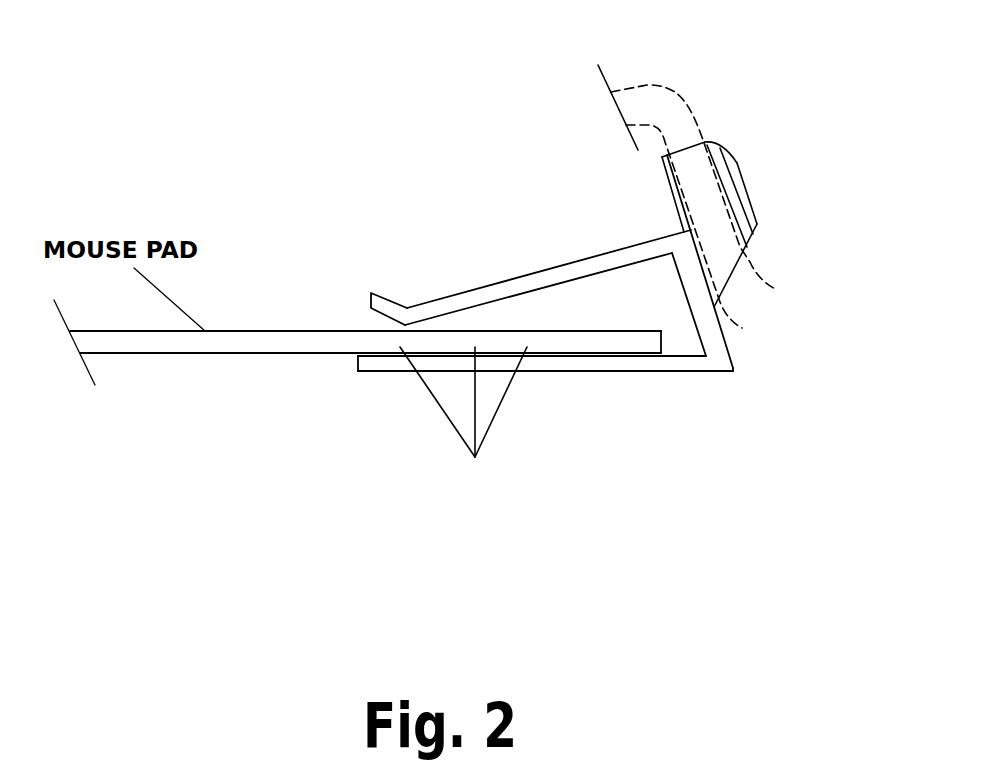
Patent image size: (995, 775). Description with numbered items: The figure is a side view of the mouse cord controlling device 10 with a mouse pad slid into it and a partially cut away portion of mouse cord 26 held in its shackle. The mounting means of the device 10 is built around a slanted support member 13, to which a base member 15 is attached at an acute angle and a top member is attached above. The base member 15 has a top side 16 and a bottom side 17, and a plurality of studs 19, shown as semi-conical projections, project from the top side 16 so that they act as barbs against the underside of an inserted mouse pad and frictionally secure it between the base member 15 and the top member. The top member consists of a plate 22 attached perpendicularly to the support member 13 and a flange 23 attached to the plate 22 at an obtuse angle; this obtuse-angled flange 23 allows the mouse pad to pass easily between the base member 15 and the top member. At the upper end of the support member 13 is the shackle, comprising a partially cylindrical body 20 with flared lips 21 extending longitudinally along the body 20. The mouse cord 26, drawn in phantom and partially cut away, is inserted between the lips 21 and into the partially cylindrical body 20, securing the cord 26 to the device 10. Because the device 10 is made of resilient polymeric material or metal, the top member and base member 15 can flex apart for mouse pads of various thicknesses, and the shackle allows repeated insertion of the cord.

The mouse cord controlling device 10 is at (462, 145).
The support member 13 is at (723, 345).
The base member 15 is at (356, 366).
The top side 16 is at (563, 353).
The bottom side 17 is at (648, 373).
The studs 19 is at (463, 420).
The partially cylindrical body 20 is at (664, 172).
The flared lips 21 is at (745, 185).
The plate 22 is at (473, 289).
The flange 23 is at (382, 293).
The mouse cord 26 is at (757, 278).